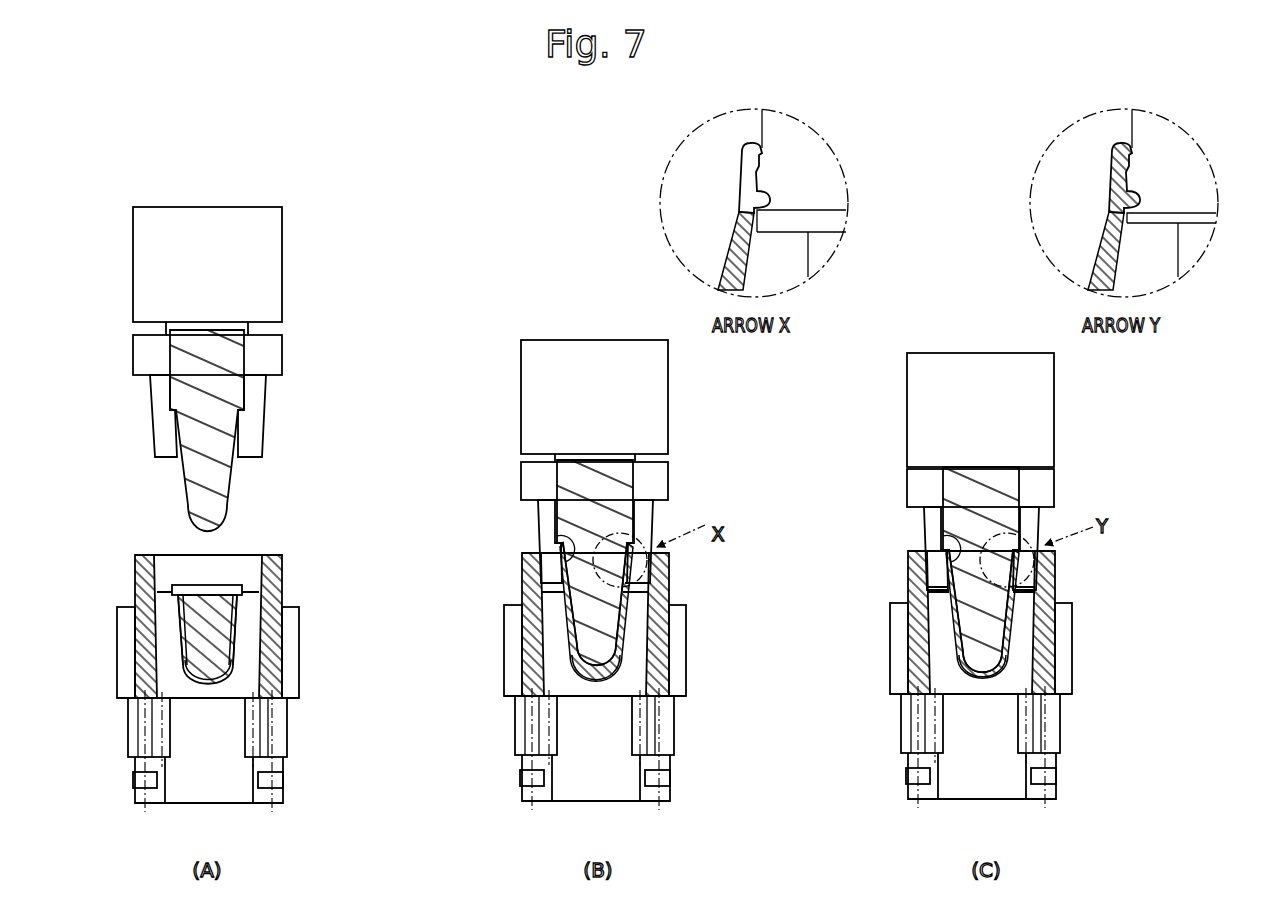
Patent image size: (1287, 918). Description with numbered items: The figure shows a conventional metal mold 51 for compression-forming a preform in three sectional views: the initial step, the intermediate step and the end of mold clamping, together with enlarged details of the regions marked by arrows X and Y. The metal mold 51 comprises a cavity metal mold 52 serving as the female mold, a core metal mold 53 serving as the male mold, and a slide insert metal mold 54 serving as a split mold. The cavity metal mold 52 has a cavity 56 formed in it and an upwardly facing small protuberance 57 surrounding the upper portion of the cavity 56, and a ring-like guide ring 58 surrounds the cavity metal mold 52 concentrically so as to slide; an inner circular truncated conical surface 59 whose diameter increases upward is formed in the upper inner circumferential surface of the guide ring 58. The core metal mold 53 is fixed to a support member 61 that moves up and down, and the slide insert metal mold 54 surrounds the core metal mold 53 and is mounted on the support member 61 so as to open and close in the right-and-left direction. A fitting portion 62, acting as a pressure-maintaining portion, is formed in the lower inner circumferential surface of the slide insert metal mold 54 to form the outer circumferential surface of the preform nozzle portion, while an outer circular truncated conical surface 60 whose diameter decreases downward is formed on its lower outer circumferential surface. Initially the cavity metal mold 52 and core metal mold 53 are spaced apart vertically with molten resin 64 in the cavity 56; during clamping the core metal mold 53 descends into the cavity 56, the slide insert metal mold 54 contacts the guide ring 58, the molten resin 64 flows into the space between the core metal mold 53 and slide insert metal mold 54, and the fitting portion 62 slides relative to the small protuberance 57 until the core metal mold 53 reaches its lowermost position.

The metal mold for compression forming 51 is at (300, 222).
The cavity metal mold 52 is at (250, 668).
The core metal mold 53 is at (222, 491).
The slide insert metal mold 54 is at (257, 419).
The cavity 56 is at (226, 586).
The small protuberance 57 is at (173, 585).
The guide ring 58 is at (282, 577).
The inner circular truncated conical surface 59 is at (157, 555).
The outer circular truncated conical surface 60 is at (155, 448).
The support member 61 is at (233, 207).
The fitting portion 62 is at (557, 534).
The molten resin 64 is at (188, 662).